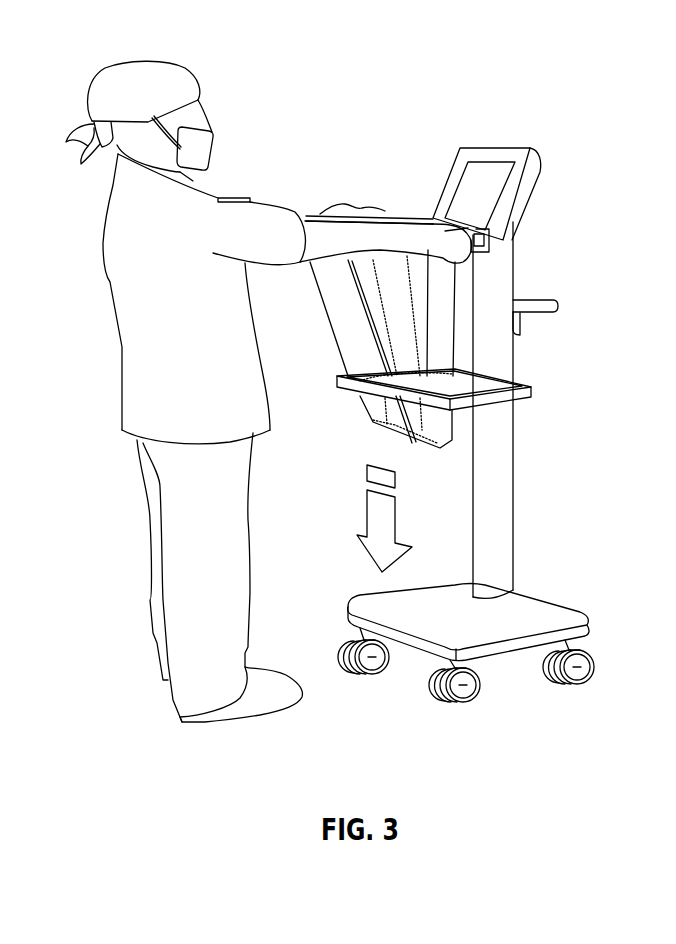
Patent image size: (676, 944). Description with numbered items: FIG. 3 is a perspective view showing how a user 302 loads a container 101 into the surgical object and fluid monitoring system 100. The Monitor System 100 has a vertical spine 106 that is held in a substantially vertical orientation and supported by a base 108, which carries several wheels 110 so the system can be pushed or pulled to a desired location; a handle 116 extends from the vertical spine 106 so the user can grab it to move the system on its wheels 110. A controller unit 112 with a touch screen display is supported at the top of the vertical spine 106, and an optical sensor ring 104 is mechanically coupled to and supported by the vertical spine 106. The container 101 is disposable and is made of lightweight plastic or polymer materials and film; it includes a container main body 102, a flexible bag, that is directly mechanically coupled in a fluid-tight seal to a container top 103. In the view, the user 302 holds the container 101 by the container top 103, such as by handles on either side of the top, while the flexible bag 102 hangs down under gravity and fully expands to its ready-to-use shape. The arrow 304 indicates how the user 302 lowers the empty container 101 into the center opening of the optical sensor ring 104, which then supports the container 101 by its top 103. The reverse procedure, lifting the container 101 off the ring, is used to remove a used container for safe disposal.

The surgical object and fluid monitoring system 100 is at (469, 66).
The container 101 is at (325, 344).
The container main body 102 is at (322, 297).
The container top 103 is at (486, 239).
The optical sensor ring 104 is at (532, 392).
The vertical spine 106 is at (508, 514).
The base 108 is at (550, 610).
The wheels 110 is at (440, 693).
The controller unit 112 is at (520, 154).
The handle 116 is at (537, 302).
The user 302 is at (214, 107).
The arrow 304 is at (368, 517).